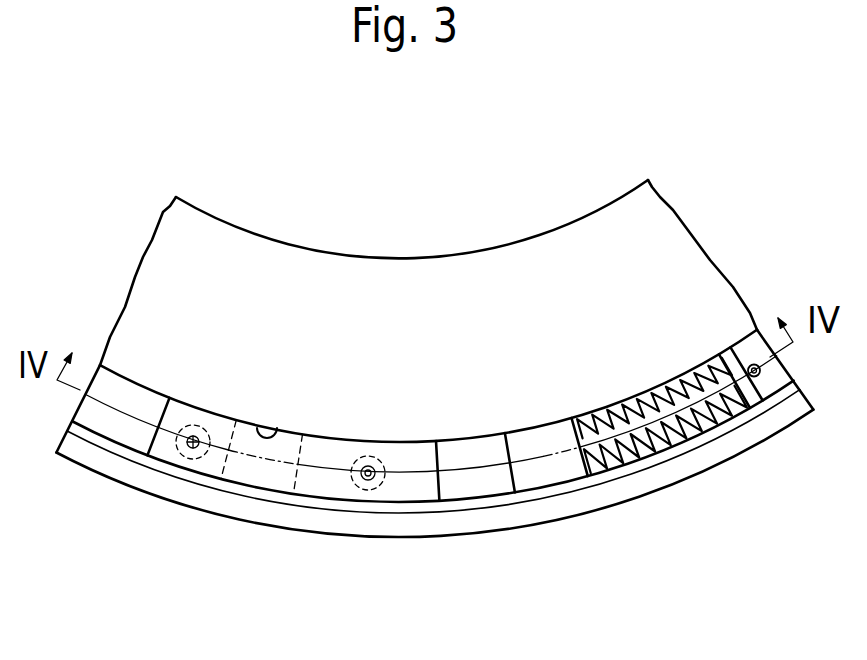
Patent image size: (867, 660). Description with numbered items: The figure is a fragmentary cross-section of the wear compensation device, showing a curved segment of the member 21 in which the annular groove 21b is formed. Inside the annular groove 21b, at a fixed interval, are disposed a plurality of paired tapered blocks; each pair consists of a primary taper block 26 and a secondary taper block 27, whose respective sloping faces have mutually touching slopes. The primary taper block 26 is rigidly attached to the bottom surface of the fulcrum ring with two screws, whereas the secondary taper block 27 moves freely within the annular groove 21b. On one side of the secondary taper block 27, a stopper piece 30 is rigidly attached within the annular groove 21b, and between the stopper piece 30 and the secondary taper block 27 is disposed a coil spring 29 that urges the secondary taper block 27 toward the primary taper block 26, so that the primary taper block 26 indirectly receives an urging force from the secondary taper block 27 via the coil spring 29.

The curved plate segment 21 is at (370, 297).
The annular groove 21b is at (260, 428).
The primary taper block 26 is at (413, 488).
The secondary taper block 27 is at (554, 470).
The coil spring 29 is at (690, 440).
The stopper piece 30 is at (762, 392).